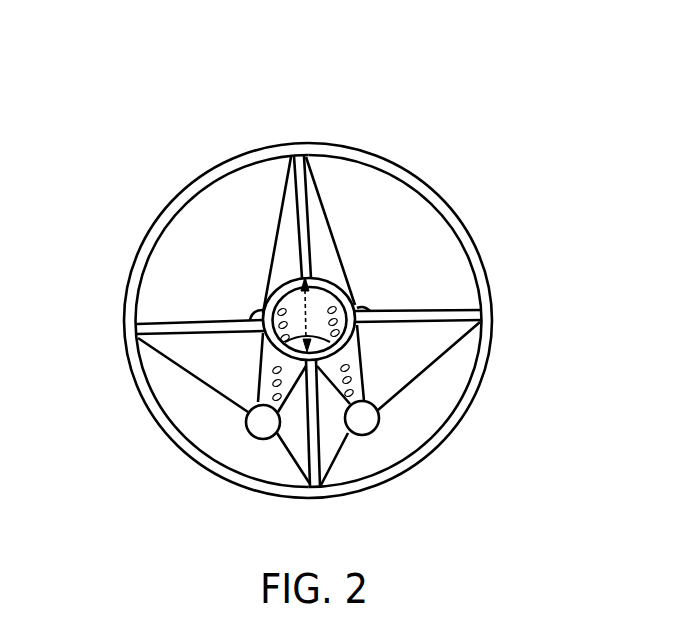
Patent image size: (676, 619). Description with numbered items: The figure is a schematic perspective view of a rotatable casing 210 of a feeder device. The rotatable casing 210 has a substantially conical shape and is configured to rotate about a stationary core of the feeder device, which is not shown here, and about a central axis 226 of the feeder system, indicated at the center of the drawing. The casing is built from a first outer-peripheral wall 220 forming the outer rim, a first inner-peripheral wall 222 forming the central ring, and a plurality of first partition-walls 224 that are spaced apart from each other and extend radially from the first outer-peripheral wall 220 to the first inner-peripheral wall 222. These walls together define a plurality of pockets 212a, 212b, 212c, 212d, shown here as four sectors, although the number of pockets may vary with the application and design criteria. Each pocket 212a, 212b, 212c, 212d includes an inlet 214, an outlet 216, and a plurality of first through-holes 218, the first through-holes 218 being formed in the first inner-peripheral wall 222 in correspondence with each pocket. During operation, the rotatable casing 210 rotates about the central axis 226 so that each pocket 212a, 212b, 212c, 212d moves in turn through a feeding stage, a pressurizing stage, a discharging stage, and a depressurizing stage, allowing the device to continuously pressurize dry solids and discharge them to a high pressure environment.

The rotatable casing 210 is at (310, 290).
The pocket 212a is at (448, 242).
The pocket 212b is at (257, 182).
The pocket 212c is at (195, 388).
The pocket 212d is at (413, 432).
The inlet 214 is at (387, 247).
The outlet 216 is at (262, 427).
The first through-holes 218 is at (288, 326).
The first outer-peripheral wall 220 is at (185, 452).
The first inner-peripheral wall 222 is at (345, 297).
The first partition-walls 224 is at (450, 315).
The central axis 226 is at (313, 277).